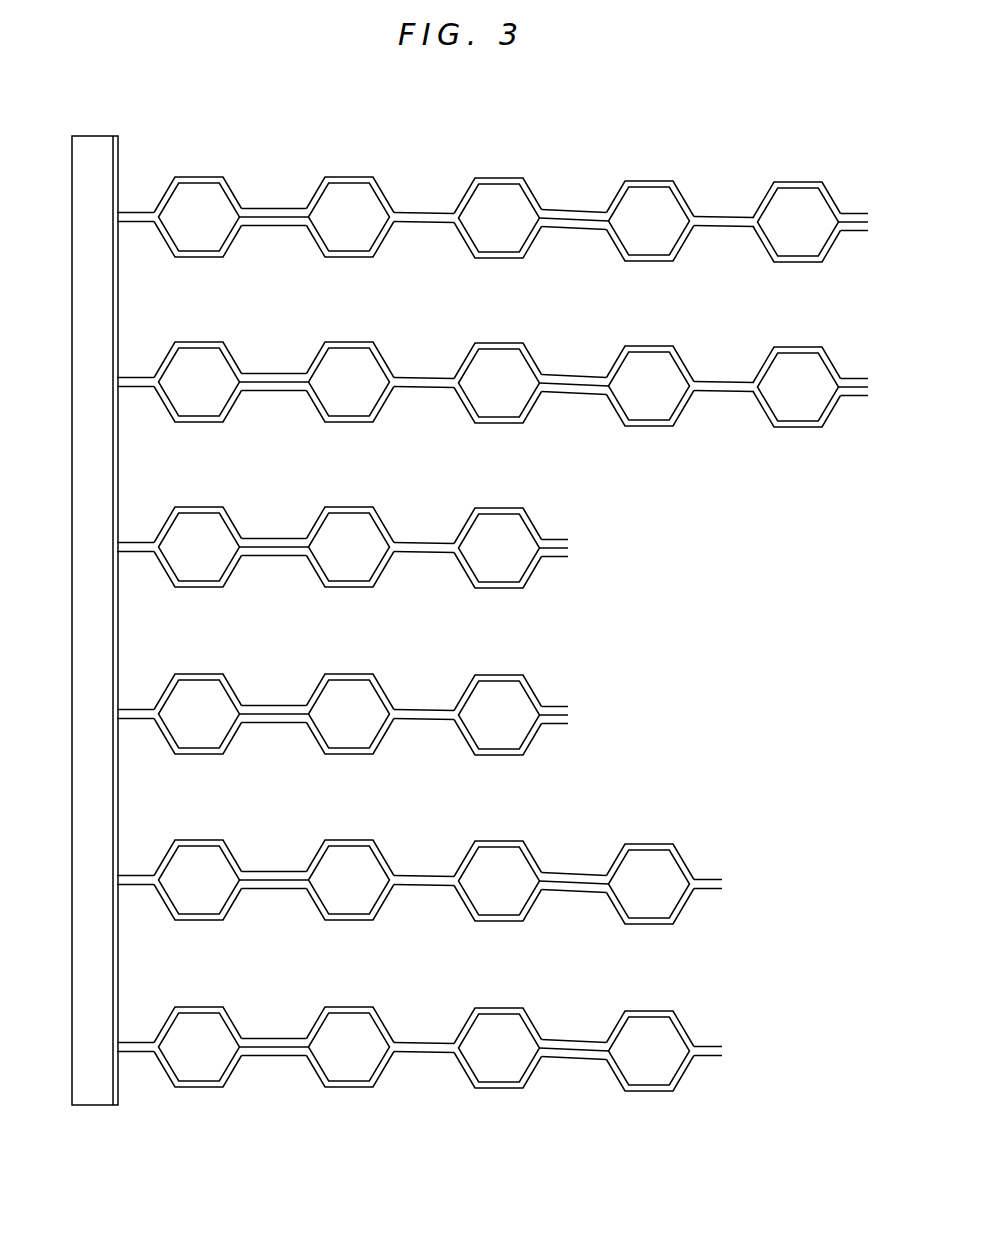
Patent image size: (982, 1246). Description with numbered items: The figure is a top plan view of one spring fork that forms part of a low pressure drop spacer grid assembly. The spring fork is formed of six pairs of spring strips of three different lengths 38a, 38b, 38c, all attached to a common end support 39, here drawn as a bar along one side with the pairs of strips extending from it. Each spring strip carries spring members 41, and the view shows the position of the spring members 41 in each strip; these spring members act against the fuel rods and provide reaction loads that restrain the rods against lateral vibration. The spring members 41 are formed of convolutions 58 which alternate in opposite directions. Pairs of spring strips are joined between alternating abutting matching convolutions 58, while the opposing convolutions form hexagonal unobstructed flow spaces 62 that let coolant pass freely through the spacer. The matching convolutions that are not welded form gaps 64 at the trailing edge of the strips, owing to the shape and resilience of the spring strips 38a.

The end support 39 is at (95, 148).
The spring strips of first length 38a is at (731, 216).
The spring strips of second length 38b is at (412, 542).
The spring strips of third length 38c is at (412, 876).
The spring members 41 is at (477, 178).
The convolutions 58 is at (267, 208).
The unobstructed flow spaces 62 is at (179, 224).
The gaps 64 is at (262, 220).